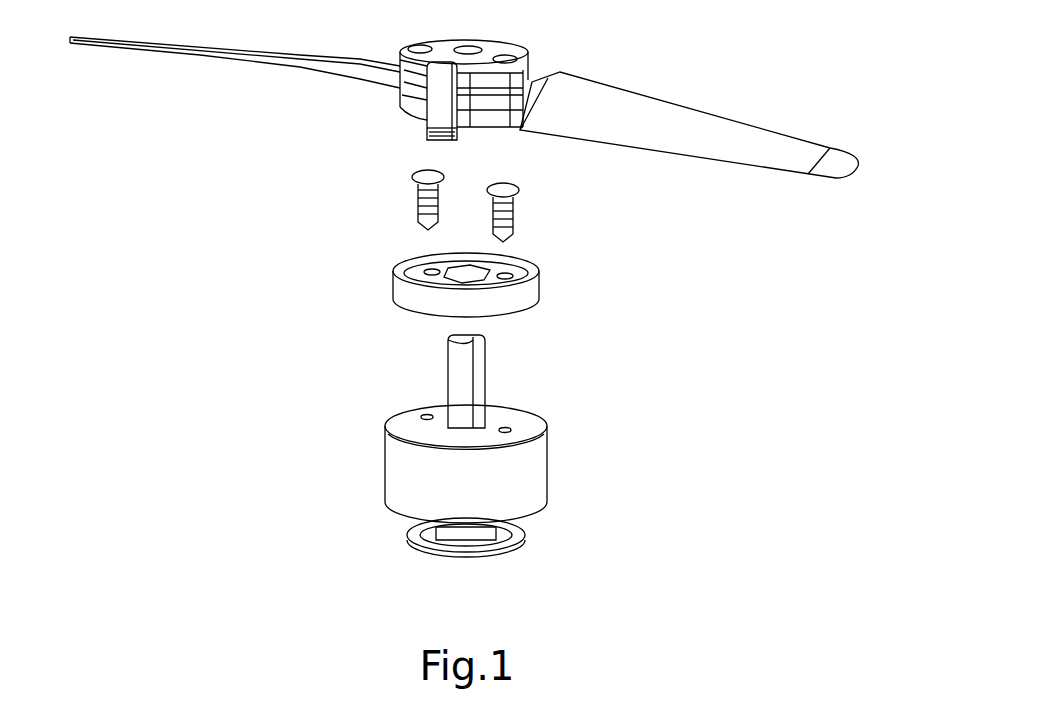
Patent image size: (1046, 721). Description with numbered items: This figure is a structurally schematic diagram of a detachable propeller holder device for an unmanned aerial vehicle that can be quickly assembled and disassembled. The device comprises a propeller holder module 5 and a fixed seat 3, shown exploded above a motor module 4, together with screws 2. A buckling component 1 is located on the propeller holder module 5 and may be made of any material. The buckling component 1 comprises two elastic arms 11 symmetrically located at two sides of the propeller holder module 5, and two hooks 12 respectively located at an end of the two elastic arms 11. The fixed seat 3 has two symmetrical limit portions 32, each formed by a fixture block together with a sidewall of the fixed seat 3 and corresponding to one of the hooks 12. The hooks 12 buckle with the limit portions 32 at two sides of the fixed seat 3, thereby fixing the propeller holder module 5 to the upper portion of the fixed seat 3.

The buckling component 1 is at (450, 60).
The elastic arm 11 is at (359, 112).
The hook 12 is at (365, 145).
The propeller holder module 5 is at (464, 98).
The screw 2 is at (565, 238).
The fixed seat 3 is at (417, 315).
The limit portion 32 is at (515, 304).
The motor module 4 is at (546, 446).